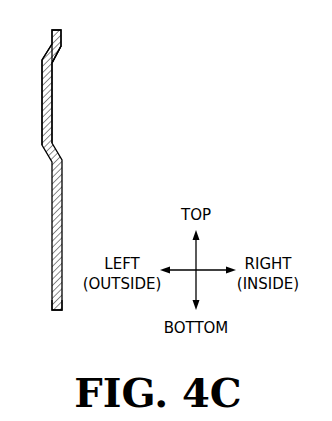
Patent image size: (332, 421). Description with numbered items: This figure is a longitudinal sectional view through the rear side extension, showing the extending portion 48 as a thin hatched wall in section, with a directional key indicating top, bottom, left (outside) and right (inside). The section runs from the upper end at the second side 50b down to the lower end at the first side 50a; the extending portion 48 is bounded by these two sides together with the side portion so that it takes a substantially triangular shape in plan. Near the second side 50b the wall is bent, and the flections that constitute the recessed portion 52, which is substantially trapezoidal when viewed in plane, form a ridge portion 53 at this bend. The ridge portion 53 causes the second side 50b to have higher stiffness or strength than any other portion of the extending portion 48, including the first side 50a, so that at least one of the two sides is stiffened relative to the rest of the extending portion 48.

The extending portion 48 is at (62, 200).
The second side 50b is at (62, 39).
The ridge portion 53 is at (58, 61).
The recessed portion 52 is at (53, 105).
The first side 50a is at (63, 310).